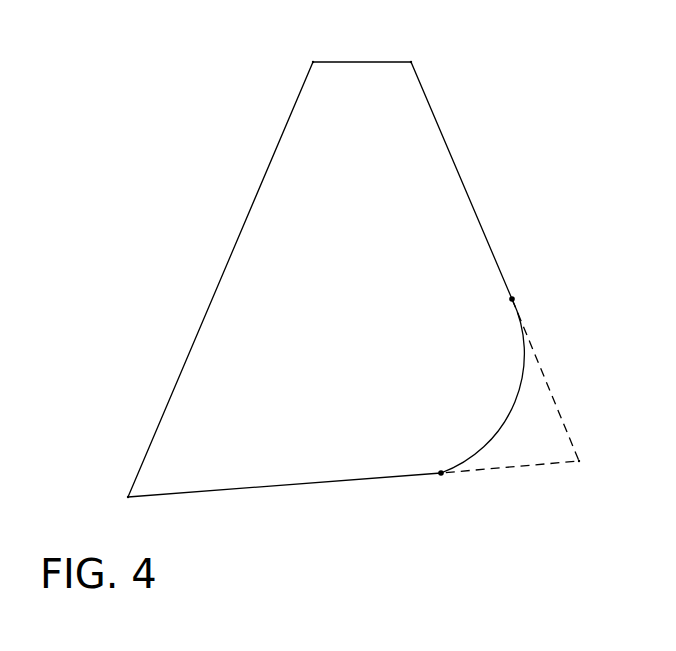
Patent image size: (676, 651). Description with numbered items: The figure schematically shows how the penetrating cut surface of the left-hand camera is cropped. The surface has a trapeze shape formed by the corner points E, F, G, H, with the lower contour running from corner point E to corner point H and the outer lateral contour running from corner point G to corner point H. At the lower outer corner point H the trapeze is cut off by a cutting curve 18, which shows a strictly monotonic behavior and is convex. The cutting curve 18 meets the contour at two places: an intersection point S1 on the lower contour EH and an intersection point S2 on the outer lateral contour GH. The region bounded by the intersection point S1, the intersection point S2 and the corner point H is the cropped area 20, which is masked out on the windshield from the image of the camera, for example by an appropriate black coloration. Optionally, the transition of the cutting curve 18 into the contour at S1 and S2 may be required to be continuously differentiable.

The cutting curve 18 is at (504, 423).
The cropped area 20 is at (541, 428).
The intersection point S1 is at (441, 475).
The intersection point S2 is at (514, 298).
The corner point E is at (114, 515).
The corner point F is at (301, 49).
The corner point G is at (423, 49).
The corner point H is at (594, 477).